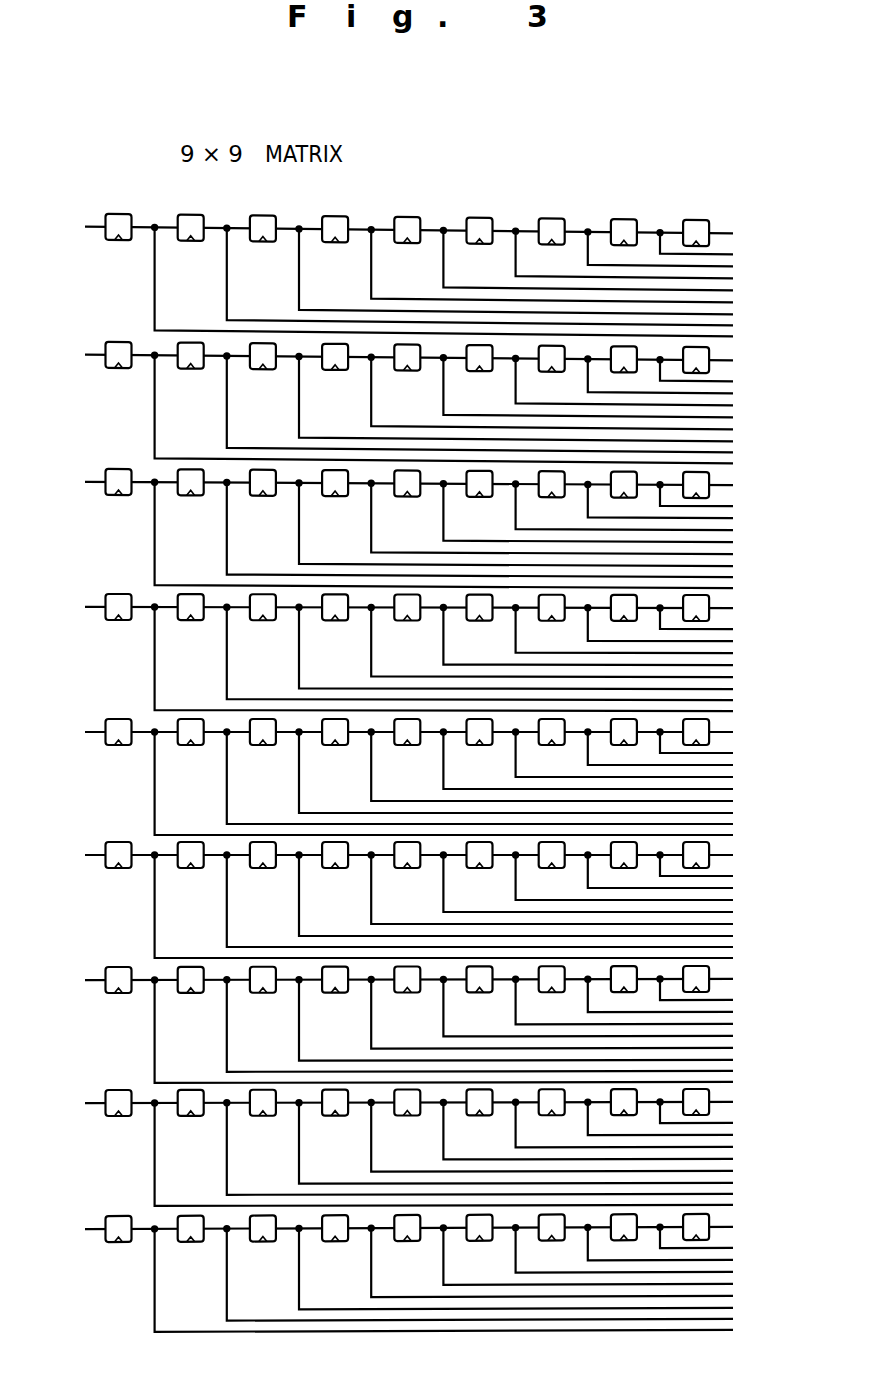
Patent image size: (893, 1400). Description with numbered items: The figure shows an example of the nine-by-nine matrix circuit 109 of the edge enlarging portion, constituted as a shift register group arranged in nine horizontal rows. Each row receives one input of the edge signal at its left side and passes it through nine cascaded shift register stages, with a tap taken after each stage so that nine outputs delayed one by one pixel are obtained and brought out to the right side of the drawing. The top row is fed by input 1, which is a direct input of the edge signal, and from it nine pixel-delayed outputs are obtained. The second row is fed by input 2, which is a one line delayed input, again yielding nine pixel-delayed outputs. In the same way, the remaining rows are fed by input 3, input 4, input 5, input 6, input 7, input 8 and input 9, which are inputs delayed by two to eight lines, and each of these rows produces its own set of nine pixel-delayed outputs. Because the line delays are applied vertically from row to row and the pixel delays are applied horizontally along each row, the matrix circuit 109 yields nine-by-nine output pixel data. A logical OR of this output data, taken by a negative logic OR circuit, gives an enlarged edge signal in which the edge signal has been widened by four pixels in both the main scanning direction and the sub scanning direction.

The 9×9 matrix circuit 109 is at (148, 168).
The delay row D1 1 is at (413, 278).
The delay row D2 2 is at (413, 405).
The delay row D3 3 is at (413, 532).
The delay row D4 4 is at (413, 656).
The delay row D5 5 is at (413, 780).
The delay row D6 6 is at (413, 903).
The delay row D7 7 is at (413, 1028).
The delay row D8 8 is at (413, 1151).
The delay row D9 9 is at (413, 1276).